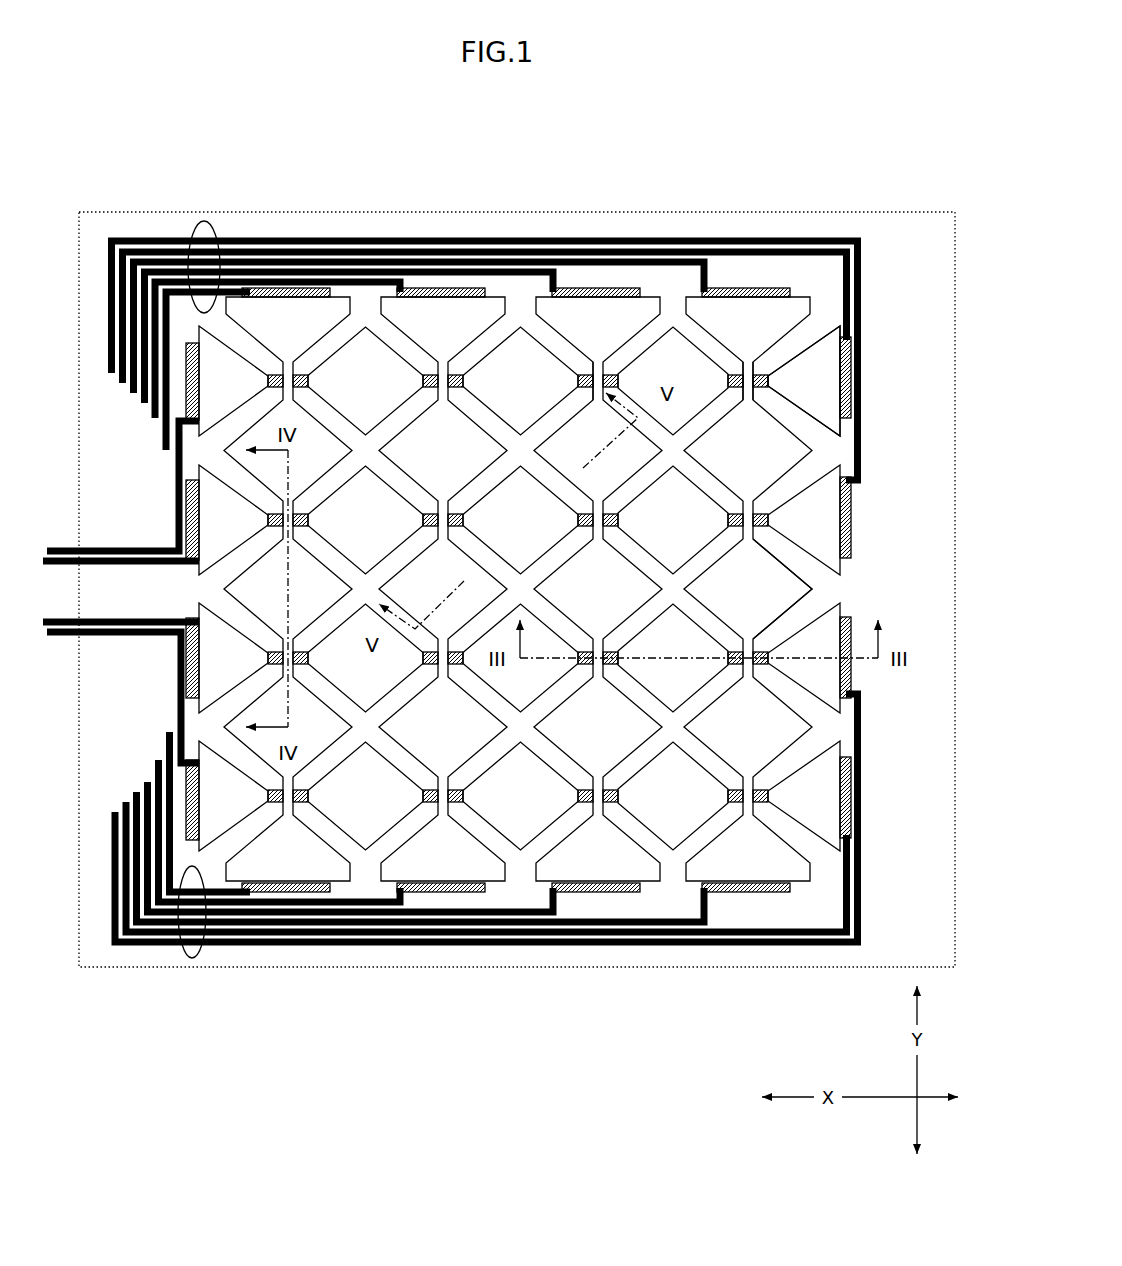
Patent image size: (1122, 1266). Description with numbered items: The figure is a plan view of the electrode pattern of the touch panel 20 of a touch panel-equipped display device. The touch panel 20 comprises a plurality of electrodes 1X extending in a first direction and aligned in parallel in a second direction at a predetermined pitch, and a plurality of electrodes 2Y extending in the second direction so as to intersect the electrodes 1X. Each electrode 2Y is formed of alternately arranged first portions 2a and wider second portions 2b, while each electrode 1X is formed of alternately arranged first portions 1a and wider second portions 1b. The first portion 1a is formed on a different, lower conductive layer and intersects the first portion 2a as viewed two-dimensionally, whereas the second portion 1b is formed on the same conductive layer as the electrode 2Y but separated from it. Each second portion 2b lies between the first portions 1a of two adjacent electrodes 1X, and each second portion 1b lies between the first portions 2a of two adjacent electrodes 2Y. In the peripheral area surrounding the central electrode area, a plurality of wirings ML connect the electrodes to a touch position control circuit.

The touch panel 20 is at (858, 199).
The electrode 2Y is at (288, 320).
The electrode 1X is at (816, 388).
The first portion 2a is at (606, 373).
The second portion 2b is at (585, 318).
The first portion 1a is at (756, 372).
The second portion 1b is at (813, 368).
The wiring ML is at (204, 222).